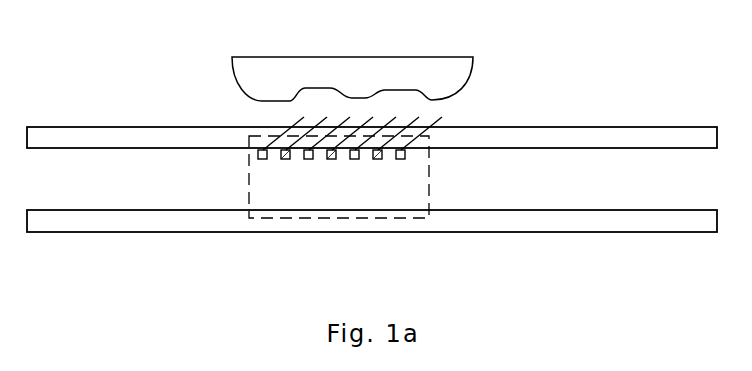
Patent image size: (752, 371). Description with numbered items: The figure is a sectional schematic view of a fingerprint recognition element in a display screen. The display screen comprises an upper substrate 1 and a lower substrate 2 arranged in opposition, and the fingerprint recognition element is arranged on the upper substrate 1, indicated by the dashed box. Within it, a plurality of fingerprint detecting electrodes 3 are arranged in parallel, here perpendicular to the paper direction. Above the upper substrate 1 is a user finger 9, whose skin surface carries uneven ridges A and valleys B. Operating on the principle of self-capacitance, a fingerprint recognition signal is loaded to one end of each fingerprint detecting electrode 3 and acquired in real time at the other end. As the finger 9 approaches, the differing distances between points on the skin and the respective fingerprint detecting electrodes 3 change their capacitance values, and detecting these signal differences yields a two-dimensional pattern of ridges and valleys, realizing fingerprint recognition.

The upper substrate 1 is at (372, 92).
The lower substrate 2 is at (372, 255).
The fingerprint detecting electrodes 3 is at (304, 117).
The finger 9 is at (410, 72).